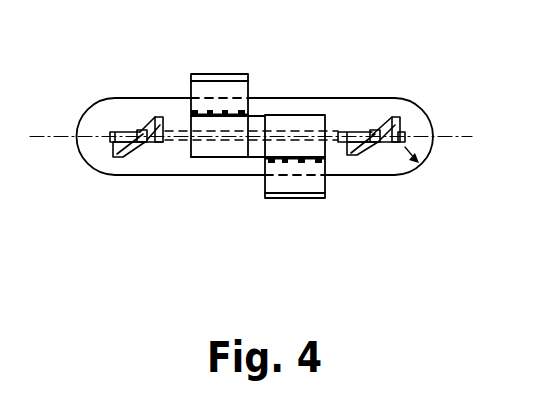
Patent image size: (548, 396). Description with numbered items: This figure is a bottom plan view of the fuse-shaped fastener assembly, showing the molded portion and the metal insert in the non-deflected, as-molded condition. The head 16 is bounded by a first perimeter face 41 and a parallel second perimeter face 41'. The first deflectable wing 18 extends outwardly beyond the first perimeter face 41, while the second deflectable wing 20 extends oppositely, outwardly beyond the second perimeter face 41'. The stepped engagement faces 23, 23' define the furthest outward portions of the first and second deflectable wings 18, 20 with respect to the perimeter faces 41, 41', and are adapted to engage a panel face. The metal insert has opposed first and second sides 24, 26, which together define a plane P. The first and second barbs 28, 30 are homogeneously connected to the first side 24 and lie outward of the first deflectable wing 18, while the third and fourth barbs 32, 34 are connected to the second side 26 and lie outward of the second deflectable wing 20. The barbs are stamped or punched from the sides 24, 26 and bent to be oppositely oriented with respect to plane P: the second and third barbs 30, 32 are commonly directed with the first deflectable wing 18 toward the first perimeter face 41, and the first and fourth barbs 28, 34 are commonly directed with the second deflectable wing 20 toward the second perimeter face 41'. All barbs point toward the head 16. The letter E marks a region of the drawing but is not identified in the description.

The head 16 is at (287, 141).
The first deflectable wing 18 is at (301, 181).
The second deflectable wing 20 is at (258, 89).
The stepped engagement face 23 is at (275, 220).
The stepped engagement face 23' is at (219, 51).
The first side 24 is at (373, 133).
The second side 26 is at (140, 142).
The first barb 28 is at (412, 122).
The second barb 30 is at (363, 150).
The third barb 32 is at (118, 157).
The fourth barb 34 is at (156, 117).
The first perimeter face 41 is at (255, 212).
The second perimeter face 41' is at (260, 65).
The plane P is at (467, 136).
The exhaust side E is at (402, 172).